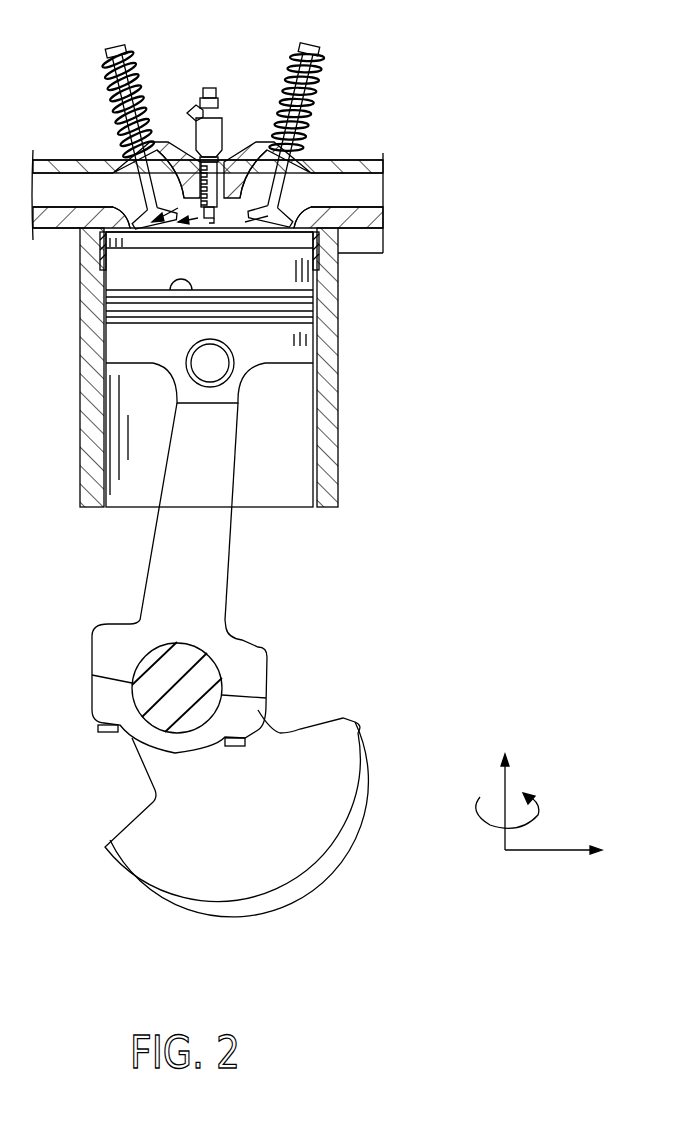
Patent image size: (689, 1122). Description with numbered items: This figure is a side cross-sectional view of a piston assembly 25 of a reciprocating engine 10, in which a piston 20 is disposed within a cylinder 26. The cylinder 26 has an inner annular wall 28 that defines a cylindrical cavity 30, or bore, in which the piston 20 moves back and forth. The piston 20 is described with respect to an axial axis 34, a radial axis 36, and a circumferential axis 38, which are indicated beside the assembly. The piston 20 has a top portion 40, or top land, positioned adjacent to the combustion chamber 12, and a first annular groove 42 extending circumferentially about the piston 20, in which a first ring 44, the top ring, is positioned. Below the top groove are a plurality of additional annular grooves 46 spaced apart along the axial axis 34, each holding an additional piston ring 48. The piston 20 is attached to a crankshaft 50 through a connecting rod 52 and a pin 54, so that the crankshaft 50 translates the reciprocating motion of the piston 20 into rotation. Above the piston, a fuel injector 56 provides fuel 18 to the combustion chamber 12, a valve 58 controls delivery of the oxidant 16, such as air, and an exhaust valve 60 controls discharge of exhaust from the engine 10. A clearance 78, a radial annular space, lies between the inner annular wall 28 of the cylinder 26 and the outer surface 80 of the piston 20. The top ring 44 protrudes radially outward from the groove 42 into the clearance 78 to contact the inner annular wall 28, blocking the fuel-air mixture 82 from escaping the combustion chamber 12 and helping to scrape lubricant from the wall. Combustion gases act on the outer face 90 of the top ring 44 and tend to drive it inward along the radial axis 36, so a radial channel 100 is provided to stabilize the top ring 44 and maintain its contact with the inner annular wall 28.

The engine 10 is at (449, 94).
The combustion chamber 12 is at (276, 214).
The oxidant 16 is at (366, 191).
The fuel 18 is at (197, 214).
The piston 20 is at (155, 343).
The piston assembly 25 is at (270, 526).
The cylinder 26 is at (338, 413).
The inner annular wall 28 is at (314, 472).
The cylindrical cavity 30 is at (153, 501).
The axial axis 34 is at (502, 787).
The radial axis 36 is at (547, 853).
The circumferential axis 38 is at (543, 820).
The top portion 40 is at (303, 263).
The first annular groove 42 is at (317, 273).
The first ring 44 is at (320, 312).
The additional annular grooves 46 is at (112, 338).
The additional piston ring 48 is at (113, 312).
The crankshaft 50 is at (150, 830).
The connecting rod 52 is at (213, 608).
The pin 54 is at (210, 368).
The fuel injector 56 is at (218, 102).
The valve 58 is at (308, 43).
The exhaust valve 60 is at (113, 45).
The clearance 78 is at (107, 284).
The outer surface 80 is at (106, 270).
The fuel-air mixture 82 is at (178, 208).
The outer face 90 is at (318, 295).
The radial channel 100 is at (182, 281).